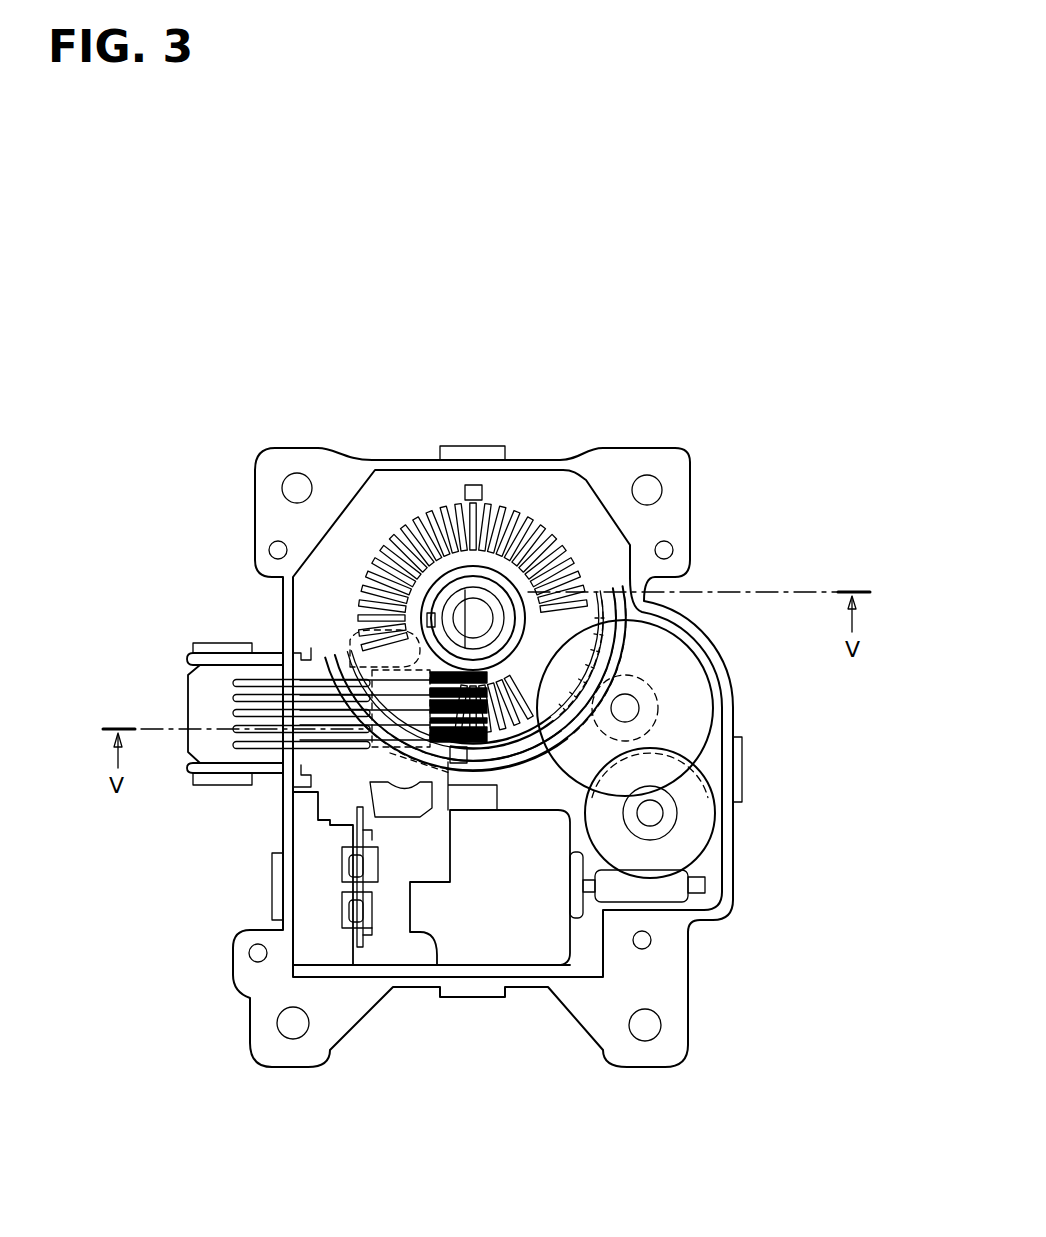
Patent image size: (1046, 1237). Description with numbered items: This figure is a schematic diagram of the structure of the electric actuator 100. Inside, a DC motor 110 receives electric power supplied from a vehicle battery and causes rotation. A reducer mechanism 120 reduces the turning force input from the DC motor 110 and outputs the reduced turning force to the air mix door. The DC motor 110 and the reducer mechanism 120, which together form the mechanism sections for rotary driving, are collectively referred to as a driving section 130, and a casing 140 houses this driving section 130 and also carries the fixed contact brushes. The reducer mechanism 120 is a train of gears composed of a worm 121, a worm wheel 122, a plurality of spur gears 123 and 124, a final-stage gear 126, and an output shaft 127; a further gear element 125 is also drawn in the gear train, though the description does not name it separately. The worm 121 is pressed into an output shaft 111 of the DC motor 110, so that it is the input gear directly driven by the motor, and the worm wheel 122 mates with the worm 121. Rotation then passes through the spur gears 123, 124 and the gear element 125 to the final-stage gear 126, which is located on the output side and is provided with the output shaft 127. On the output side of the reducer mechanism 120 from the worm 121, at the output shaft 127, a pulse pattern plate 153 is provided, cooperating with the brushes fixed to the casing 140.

The electric actuator 100 is at (717, 512).
The DC motor 110 is at (477, 953).
The output shaft 111 is at (705, 880).
The reducer mechanism 120 is at (719, 772).
The worm 121 is at (670, 892).
The worm wheel 122 is at (693, 838).
The spur gear 123 is at (673, 813).
The spur gear 124 is at (687, 687).
The pinion gear 125 is at (730, 658).
The final-stage gear 126 is at (607, 573).
The output shaft 127 is at (478, 617).
The driving section 130 is at (569, 770).
The casing 140 is at (283, 612).
The pulse pattern plate 153 is at (345, 558).